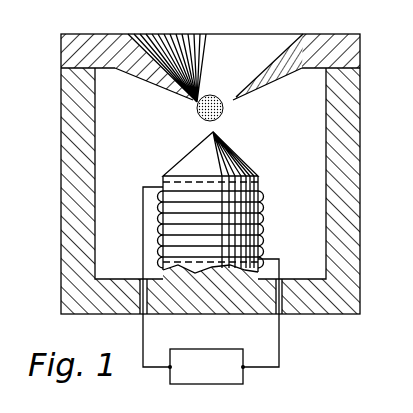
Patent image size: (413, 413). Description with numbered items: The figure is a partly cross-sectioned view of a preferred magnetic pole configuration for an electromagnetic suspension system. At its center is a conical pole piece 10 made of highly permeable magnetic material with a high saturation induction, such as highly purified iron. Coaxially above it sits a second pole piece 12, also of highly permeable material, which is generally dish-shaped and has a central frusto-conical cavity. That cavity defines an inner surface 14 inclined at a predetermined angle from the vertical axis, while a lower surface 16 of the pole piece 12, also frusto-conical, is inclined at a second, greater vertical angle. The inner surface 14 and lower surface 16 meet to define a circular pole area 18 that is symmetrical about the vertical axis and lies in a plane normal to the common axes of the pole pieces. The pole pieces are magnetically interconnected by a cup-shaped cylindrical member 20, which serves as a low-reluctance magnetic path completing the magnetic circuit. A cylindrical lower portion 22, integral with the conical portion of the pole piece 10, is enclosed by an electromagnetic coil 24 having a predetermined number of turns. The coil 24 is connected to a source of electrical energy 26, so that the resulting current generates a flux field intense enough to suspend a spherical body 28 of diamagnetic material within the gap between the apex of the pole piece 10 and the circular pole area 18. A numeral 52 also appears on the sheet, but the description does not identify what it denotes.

The conical pole piece 10 is at (237, 158).
The second pole piece 12 is at (288, 54).
The inner surface 14 is at (257, 78).
The lower surface 16 is at (287, 76).
The circular pole area 18 is at (188, 104).
The cup-shaped cylindrical member 20 is at (349, 118).
The cylindrical lower portion 22 is at (161, 249).
The electromagnetic coil 24 is at (262, 226).
The source of electrical energy 26 is at (244, 373).
The spherical body 28 is at (224, 116).
The sheet reference 52 is at (412, 401).